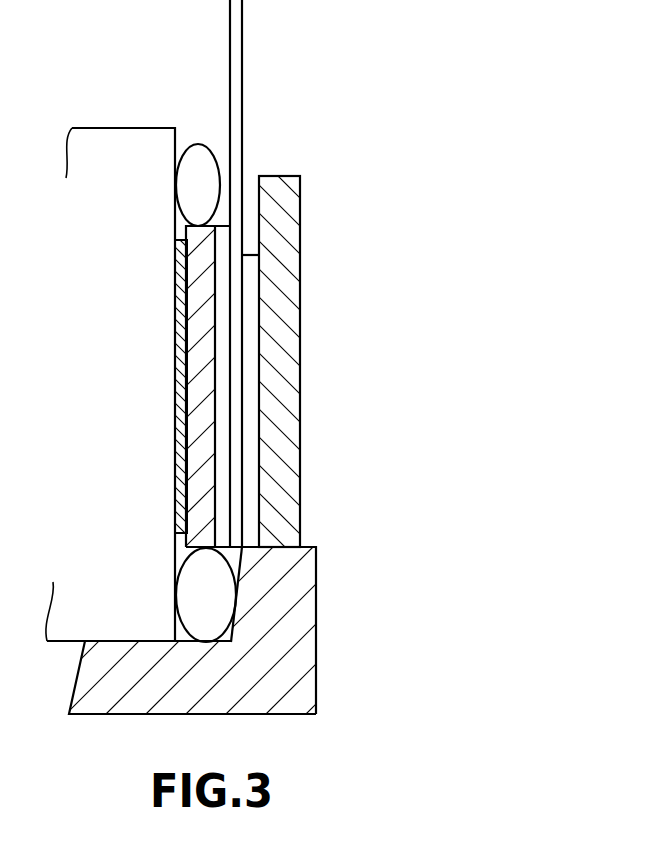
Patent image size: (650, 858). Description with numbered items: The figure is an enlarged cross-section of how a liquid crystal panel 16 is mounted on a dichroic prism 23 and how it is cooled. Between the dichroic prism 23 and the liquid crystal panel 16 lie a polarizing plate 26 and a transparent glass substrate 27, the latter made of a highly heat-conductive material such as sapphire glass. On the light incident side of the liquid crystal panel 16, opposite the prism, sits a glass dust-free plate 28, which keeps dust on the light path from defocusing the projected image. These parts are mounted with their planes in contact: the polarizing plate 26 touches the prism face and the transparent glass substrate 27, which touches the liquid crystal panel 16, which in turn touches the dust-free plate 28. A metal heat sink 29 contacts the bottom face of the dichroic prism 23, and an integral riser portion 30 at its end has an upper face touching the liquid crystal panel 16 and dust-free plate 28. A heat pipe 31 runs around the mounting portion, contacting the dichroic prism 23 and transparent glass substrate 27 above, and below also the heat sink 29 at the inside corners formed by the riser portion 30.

The liquid crystal panel 16 is at (232, 252).
The dichroic prism 23 is at (130, 147).
The polarizing plate 26 is at (183, 428).
The transparent glass substrate 27 is at (192, 258).
The dust-free plate 28 is at (290, 340).
The heat sink 29 is at (275, 695).
The riser portion 30 is at (305, 577).
The heat pipe 31 is at (200, 165).